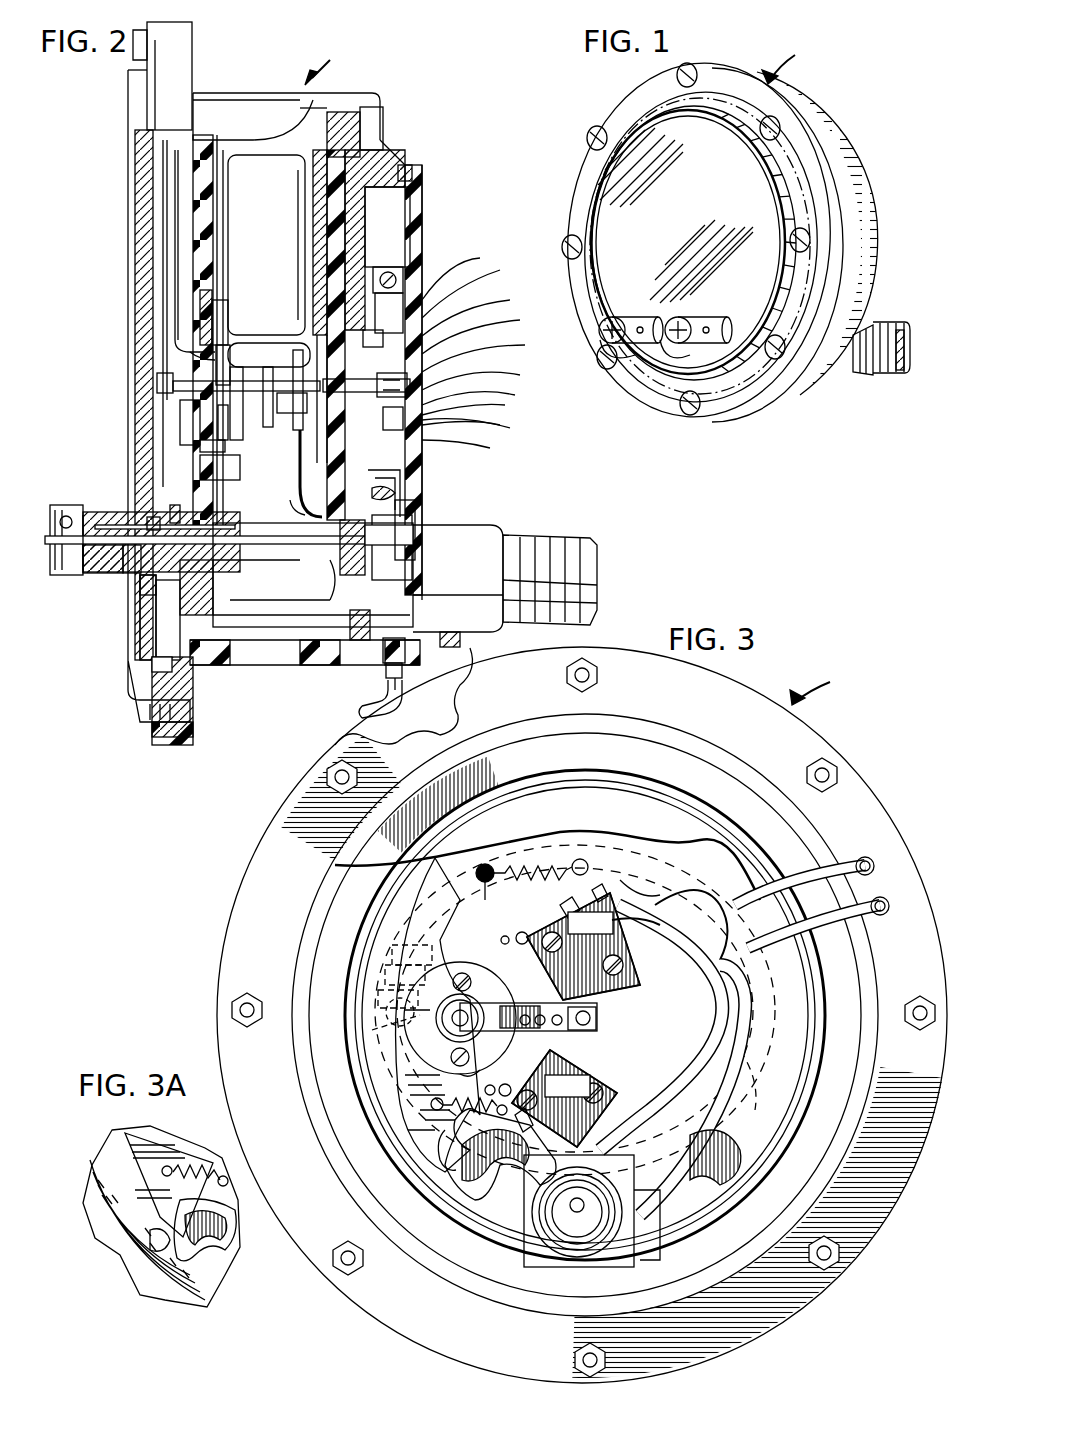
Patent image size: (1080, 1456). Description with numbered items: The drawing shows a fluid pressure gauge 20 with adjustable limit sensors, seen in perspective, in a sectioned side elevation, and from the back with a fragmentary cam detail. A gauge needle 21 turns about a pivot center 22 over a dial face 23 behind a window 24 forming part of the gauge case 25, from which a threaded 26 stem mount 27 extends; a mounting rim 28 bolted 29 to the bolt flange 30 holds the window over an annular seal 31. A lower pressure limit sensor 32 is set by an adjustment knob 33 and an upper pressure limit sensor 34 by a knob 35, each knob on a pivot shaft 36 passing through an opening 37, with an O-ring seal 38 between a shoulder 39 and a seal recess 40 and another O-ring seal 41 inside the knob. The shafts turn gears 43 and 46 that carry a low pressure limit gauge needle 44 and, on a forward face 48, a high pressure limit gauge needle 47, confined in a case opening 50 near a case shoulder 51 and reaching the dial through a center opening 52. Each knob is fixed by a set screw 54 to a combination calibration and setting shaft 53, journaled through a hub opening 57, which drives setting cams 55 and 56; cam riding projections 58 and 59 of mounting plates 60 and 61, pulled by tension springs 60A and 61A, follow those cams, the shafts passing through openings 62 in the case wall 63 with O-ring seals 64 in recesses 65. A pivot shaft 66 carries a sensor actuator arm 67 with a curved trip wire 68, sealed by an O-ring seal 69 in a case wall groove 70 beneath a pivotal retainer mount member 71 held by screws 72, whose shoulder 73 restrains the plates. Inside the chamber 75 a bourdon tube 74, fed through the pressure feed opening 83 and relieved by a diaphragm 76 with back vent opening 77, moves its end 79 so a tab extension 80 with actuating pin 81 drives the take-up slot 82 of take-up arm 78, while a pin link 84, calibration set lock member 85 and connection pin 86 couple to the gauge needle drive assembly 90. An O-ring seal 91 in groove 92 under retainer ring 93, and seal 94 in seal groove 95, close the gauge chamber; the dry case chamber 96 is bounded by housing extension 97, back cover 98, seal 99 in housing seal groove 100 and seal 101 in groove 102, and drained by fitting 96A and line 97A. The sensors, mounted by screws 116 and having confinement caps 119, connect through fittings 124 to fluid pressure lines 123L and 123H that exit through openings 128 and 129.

In FIG. 2, the fluid pressure gauge 20 is at (330, 60).
In FIG. 1, the fluid pressure gauge 20 is at (795, 55).
In FIG. 3, the fluid pressure gauge 20 is at (821, 684).
In FIG. 3A, the fluid pressure gauge 20 is at (113, 1284).
In FIG. 2, the gauge needle 21 is at (163, 150).
In FIG. 2, the pivot center 22 is at (157, 388).
In FIG. 2, the dial face 23 is at (160, 112).
In FIG. 2, the window 24 is at (136, 205).
In FIG. 1, the window 24 is at (612, 175).
In FIG. 2, the gauge case 25 is at (250, 95).
In FIG. 1, the gauge case 25 is at (795, 120).
In FIG. 3, the gauge case 25 is at (680, 740).
In FIG. 2, the threads 26 is at (542, 535).
In FIG. 1, the threads 26 is at (870, 376).
In FIG. 3, the threads 26 is at (636, 1214).
In FIG. 2, the stem mount 27 is at (598, 548).
In FIG. 1, the stem mount 27 is at (896, 320).
In FIG. 3, the stem mount 27 is at (562, 1268).
In FIG. 2, the mounting rim 28 is at (150, 672).
In FIG. 1, the mounting rim 28 is at (585, 212).
In FIG. 2, the bolts 29 is at (136, 50).
In FIG. 1, the bolts 29 is at (598, 128).
In FIG. 3, the bolts 29 is at (568, 676).
In FIG. 2, the bolt flange 30 is at (172, 748).
In FIG. 1, the bolt flange 30 is at (820, 210).
In FIG. 3, the bolt flange 30 is at (810, 735).
In FIG. 2, the annular seal 31 is at (152, 665).
In FIG. 2, the lower pressure limit sensor 32 is at (400, 410).
In FIG. 3, the lower pressure limit sensor 32 is at (570, 1090).
In FIG. 1, the adjustment knob 33 is at (620, 316).
In FIG. 2, the upper pressure limit sensor 34 is at (395, 278).
In FIG. 3, the upper pressure limit sensor 34 is at (575, 935).
In FIG. 2, the adjustment knob 35 is at (52, 515).
In FIG. 1, the adjustment knob 35 is at (680, 316).
In FIG. 2, the pivot shaft 36 is at (98, 575).
In FIG. 2, the opening 37 is at (140, 600).
In FIG. 2, the O-ring seal 38 is at (175, 512).
In FIG. 2, the shoulder 39 is at (156, 588).
In FIG. 2, the seal recess 40 is at (156, 615).
In FIG. 2, the O-ring seal 41 is at (97, 523).
In FIG. 2, the gear 43 is at (220, 320).
In FIG. 2, the low pressure limit gauge needle 44 is at (178, 345).
In FIG. 2, the gear 46 is at (262, 300).
In FIG. 2, the high pressure limit gauge needle 47 is at (176, 178).
In FIG. 2, the forward face 48 is at (195, 356).
In FIG. 2, the case opening 50 is at (212, 295).
In FIG. 2, the case shoulder 51 is at (230, 348).
In FIG. 2, the center opening 52 is at (218, 432).
In FIG. 2, the combination calibration and setting shaft 53 is at (258, 580).
In FIG. 2, the set screw 54 is at (80, 508).
In FIG. 1, the set screw 54 is at (645, 358).
In FIG. 2, the setting cam 55 is at (412, 555).
In FIG. 3, the setting cam 55 is at (484, 1178).
In FIG. 3A, the setting cam 55 is at (238, 1246).
In FIG. 3, the setting cam 56 is at (700, 1160).
In FIG. 2, the hub opening 57 is at (130, 575).
In FIG. 2, the cam riding projection 58 is at (398, 480).
In FIG. 3, the cam riding projection 58 is at (430, 1150).
In FIG. 3A, the cam riding projection 58 is at (150, 1238).
In FIG. 3, the cam riding projection 59 is at (748, 1090).
In FIG. 2, the mounting plate 60 is at (400, 470).
In FIG. 3, the mounting plate 60 is at (628, 1080).
In FIG. 3A, the mounting plate 60 is at (165, 1145).
In FIG. 3, the tension spring 60A is at (475, 1098).
In FIG. 3A, the tension spring 60A is at (195, 1170).
In FIG. 2, the mounting plate 61 is at (385, 270).
In FIG. 3, the mounting plate 61 is at (618, 915).
In FIG. 3, the tension spring 61A is at (530, 862).
In FIG. 2, the opening 62 is at (342, 540).
In FIG. 2, the case wall 63 is at (360, 612).
In FIG. 3, the case wall 63 is at (612, 850).
In FIG. 2, the O-ring seal 64 is at (410, 535).
In FIG. 2, the recess 65 is at (333, 575).
In FIG. 2, the pivot shaft 66 is at (482, 400).
In FIG. 3, the pivot shaft 66 is at (470, 1010).
In FIG. 2, the sensor actuator arm 67 is at (490, 385).
In FIG. 3, the sensor actuator arm 67 is at (545, 1012).
In FIG. 2, the curved trip wire 68 is at (490, 368).
In FIG. 3, the curved trip wire 68 is at (610, 990).
In FIG. 2, the O-ring seal 69 is at (478, 420).
In FIG. 2, the case wall groove 70 is at (465, 448).
In FIG. 2, the pivotal retainer mount member 71 is at (482, 323).
In FIG. 3, the pivotal retainer mount member 71 is at (468, 998).
In FIG. 2, the screws 72 is at (448, 346).
In FIG. 3, the screws 72 is at (460, 972).
In FIG. 2, the shoulder 73 is at (472, 262).
In FIG. 2, the bourdon tube 74 is at (230, 160).
In FIG. 3, the bourdon tube 74 is at (498, 835).
In FIG. 2, the chamber 75 is at (260, 138).
In FIG. 2, the relief diaphragm 76 is at (318, 185).
In FIG. 2, the back vent opening 77 is at (365, 160).
In FIG. 2, the take-up arm 78 is at (322, 462).
In FIG. 3, the take-up arm 78 is at (412, 1048).
In FIG. 2, the bourdon tube end 79 is at (268, 365).
In FIG. 3, the bourdon tube end 79 is at (392, 952).
In FIG. 2, the tab extension 80 is at (275, 344).
In FIG. 3, the tab extension 80 is at (385, 972).
In FIG. 2, the sensor drive actuating pin 81 is at (296, 350).
In FIG. 3, the sensor drive actuating pin 81 is at (378, 998).
In FIG. 3, the take-up slot 82 is at (380, 1028).
In FIG. 3, the pressure feed opening 83 is at (578, 1212).
In FIG. 2, the pin link 84 is at (182, 415).
In FIG. 2, the calibration set lock member 85 is at (200, 470).
In FIG. 2, the connection pin 86 is at (200, 448).
In FIG. 2, the gauge needle drive assembly 90 is at (250, 545).
In FIG. 2, the O-ring seal 91 is at (345, 115).
In FIG. 2, the groove 92 is at (335, 118).
In FIG. 2, the retainer ring 93 is at (372, 110).
In FIG. 2, the O-ring type seal 94 is at (362, 626).
In FIG. 2, the seal groove 95 is at (370, 680).
In FIG. 2, the case chamber 96 is at (340, 215).
In FIG. 2, the drain fitting 96A is at (362, 705).
In FIG. 2, the housing extension 97 is at (405, 670).
In FIG. 2, the line 97A is at (362, 714).
In FIG. 2, the back cover 98 is at (410, 185).
In FIG. 3, the back cover 98 is at (730, 860).
In FIG. 2, the seal 99 is at (415, 170).
In FIG. 2, the housing seal groove 100 is at (392, 152).
In FIG. 2, the seal 101 is at (430, 622).
In FIG. 2, the groove 102 is at (446, 632).
In FIG. 3, the mounting screws 116 is at (620, 962).
In FIG. 2, the confinement cap 119 is at (376, 265).
In FIG. 3, the fluid pressure line 123H is at (678, 900).
In FIG. 3, the fluid pressure line 123L is at (598, 1014).
In FIG. 3, the fitting 124 is at (625, 925).
In FIG. 3, the opening 128 is at (755, 985).
In FIG. 3, the opening 129 is at (738, 915).